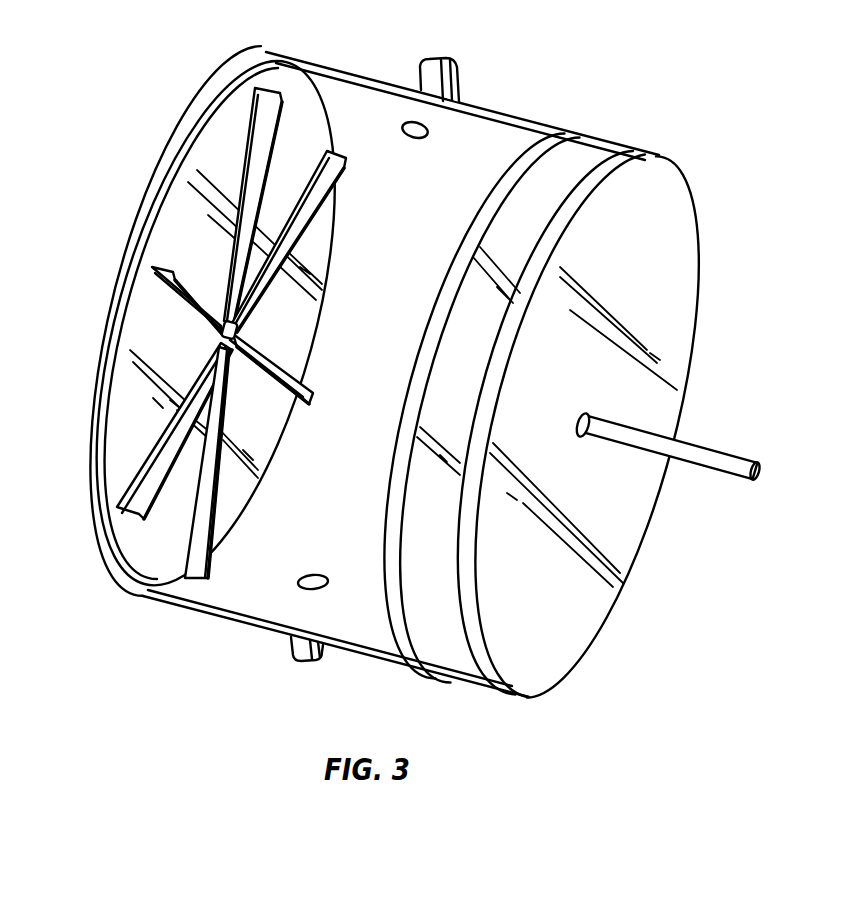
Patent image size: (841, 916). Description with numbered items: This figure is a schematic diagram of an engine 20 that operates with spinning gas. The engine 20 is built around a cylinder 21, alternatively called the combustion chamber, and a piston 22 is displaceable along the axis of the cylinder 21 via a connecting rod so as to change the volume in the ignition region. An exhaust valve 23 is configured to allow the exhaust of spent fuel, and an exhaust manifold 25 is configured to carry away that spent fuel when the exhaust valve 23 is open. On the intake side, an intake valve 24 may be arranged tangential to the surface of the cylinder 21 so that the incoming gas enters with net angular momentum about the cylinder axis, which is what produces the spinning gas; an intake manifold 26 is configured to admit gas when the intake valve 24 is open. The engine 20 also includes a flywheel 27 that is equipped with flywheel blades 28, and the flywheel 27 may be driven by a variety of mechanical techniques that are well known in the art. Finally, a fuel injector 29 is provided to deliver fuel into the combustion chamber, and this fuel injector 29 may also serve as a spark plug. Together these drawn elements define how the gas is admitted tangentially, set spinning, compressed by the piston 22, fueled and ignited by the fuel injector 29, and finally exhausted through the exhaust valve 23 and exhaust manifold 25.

The engine 20 is at (172, 24).
The cylinder 21 is at (493, 146).
The piston 22 is at (553, 170).
The exhaust valve 23 is at (428, 131).
The intake valve 24 is at (313, 592).
The exhaust manifold 25 is at (440, 60).
The intake manifold 26 is at (297, 665).
The flywheel 27 is at (190, 222).
The flywheel blades 28 is at (145, 490).
The fuel injector 29 is at (222, 333).